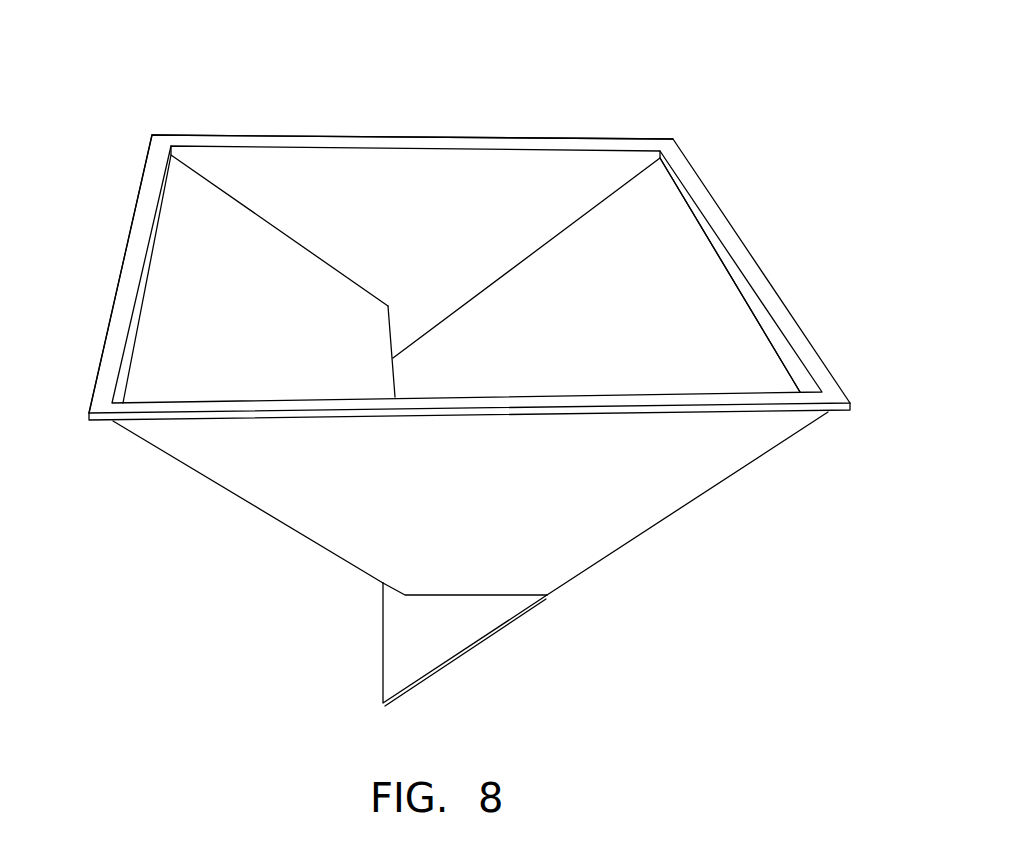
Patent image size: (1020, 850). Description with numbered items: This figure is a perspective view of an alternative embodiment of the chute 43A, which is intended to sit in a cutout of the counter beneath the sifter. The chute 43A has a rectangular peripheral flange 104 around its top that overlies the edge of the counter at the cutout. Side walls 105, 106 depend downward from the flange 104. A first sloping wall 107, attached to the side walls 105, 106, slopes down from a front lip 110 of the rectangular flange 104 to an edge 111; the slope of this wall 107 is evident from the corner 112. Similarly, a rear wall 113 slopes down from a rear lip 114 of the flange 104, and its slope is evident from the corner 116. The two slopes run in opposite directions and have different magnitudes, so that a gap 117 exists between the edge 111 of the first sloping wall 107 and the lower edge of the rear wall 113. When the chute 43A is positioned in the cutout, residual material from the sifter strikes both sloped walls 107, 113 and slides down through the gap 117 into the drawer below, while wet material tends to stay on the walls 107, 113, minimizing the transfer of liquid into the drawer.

The chute 43A is at (663, 123).
The rectangular peripheral flange 104 is at (695, 198).
The side wall 105 is at (510, 195).
The side wall 106 is at (358, 512).
The first sloping wall 107 is at (260, 252).
The front lip 110 is at (142, 222).
The edge 111 is at (392, 327).
The corner 112 is at (215, 483).
The rear wall 113 is at (733, 338).
The rear lip 114 is at (732, 245).
The corner 116 is at (673, 512).
The gap 117 is at (383, 632).